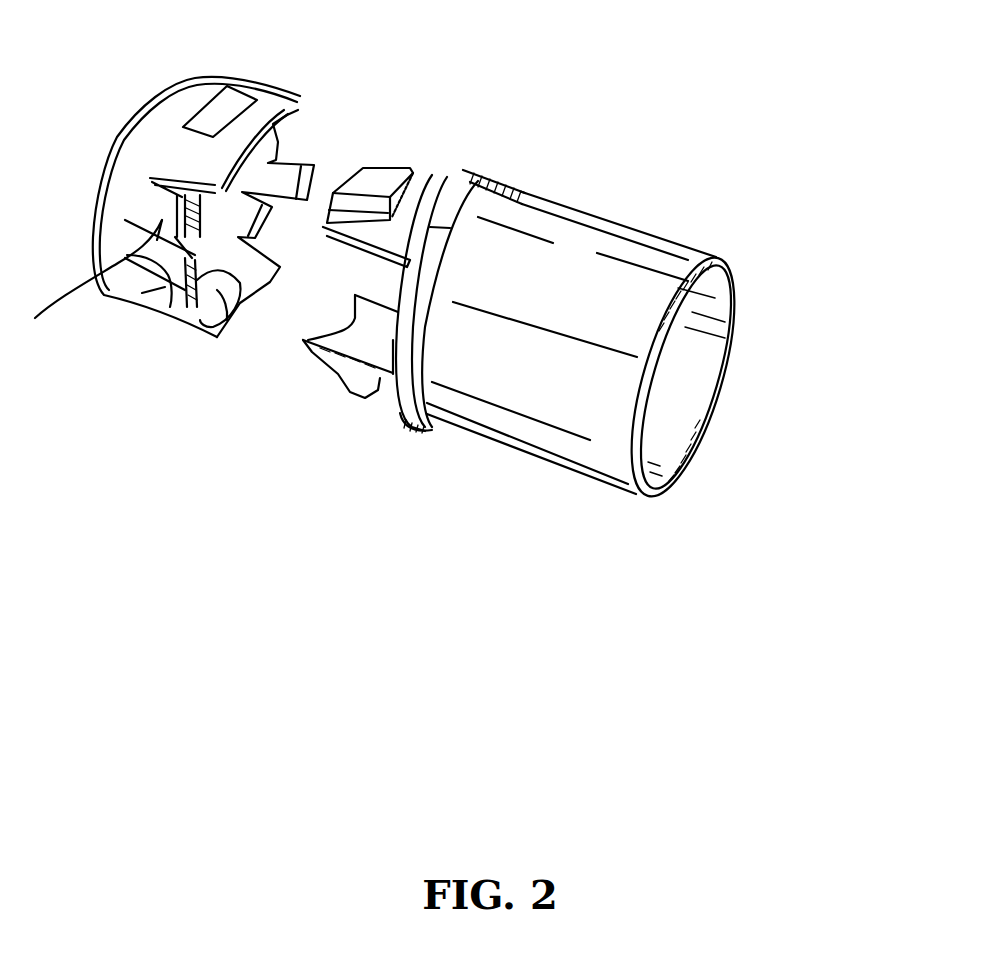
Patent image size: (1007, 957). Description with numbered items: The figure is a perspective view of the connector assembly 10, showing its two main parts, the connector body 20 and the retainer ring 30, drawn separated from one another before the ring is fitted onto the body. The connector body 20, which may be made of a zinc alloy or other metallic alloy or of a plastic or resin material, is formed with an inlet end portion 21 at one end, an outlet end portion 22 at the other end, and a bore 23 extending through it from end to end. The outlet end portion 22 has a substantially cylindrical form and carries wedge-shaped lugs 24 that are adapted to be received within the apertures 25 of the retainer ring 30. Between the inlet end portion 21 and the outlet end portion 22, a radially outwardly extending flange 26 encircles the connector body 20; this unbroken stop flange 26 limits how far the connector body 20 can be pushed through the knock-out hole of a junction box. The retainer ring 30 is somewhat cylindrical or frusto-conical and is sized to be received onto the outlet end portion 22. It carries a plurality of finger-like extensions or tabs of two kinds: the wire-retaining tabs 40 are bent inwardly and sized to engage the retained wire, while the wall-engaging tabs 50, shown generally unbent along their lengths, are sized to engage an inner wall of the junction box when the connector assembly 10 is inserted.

The connector assembly 10 is at (100, 357).
The connector body 20 is at (620, 206).
The inlet end portion 21 is at (518, 453).
The outlet end portion 22 is at (423, 183).
The bore 23 is at (700, 313).
The wedge-shaped lugs 24 is at (379, 170).
The apertures 25 is at (228, 100).
The flange 26 is at (473, 167).
The retainer ring 30 is at (220, 77).
The wire-retaining tabs 40 is at (287, 140).
The wall-engaging tabs 50 is at (310, 167).